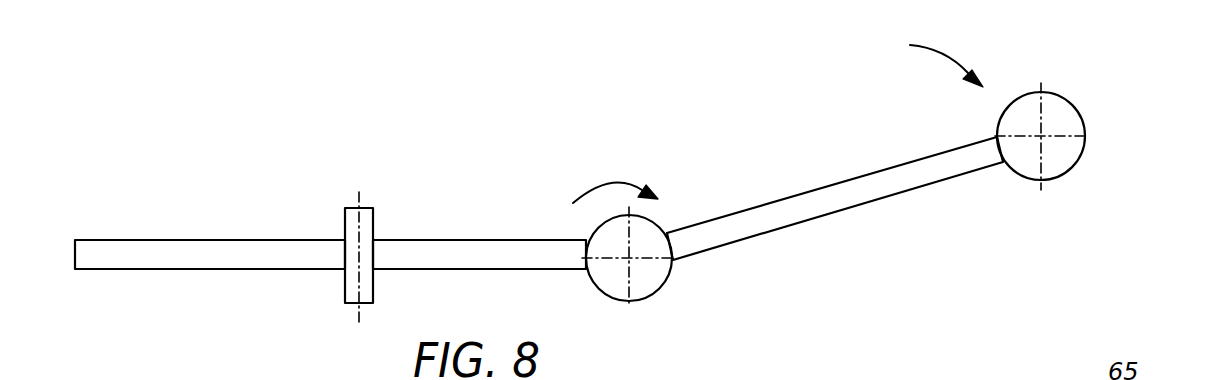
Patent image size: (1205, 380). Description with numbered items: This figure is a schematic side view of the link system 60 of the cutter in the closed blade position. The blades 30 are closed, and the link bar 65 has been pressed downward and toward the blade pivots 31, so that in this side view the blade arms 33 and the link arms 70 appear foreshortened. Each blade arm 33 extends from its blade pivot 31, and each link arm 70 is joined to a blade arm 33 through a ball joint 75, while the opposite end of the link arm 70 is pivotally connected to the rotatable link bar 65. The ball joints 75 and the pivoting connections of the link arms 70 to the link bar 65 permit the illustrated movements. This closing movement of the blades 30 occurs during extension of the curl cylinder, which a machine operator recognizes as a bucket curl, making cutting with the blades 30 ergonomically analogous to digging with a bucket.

The blade 30 is at (203, 240).
The blade pivot 31 is at (373, 218).
The blade arm 33 is at (477, 240).
The link system 60 is at (680, 154).
The link bar 65 is at (1082, 110).
The link arm 70 is at (787, 200).
The ball joint 75 is at (663, 288).